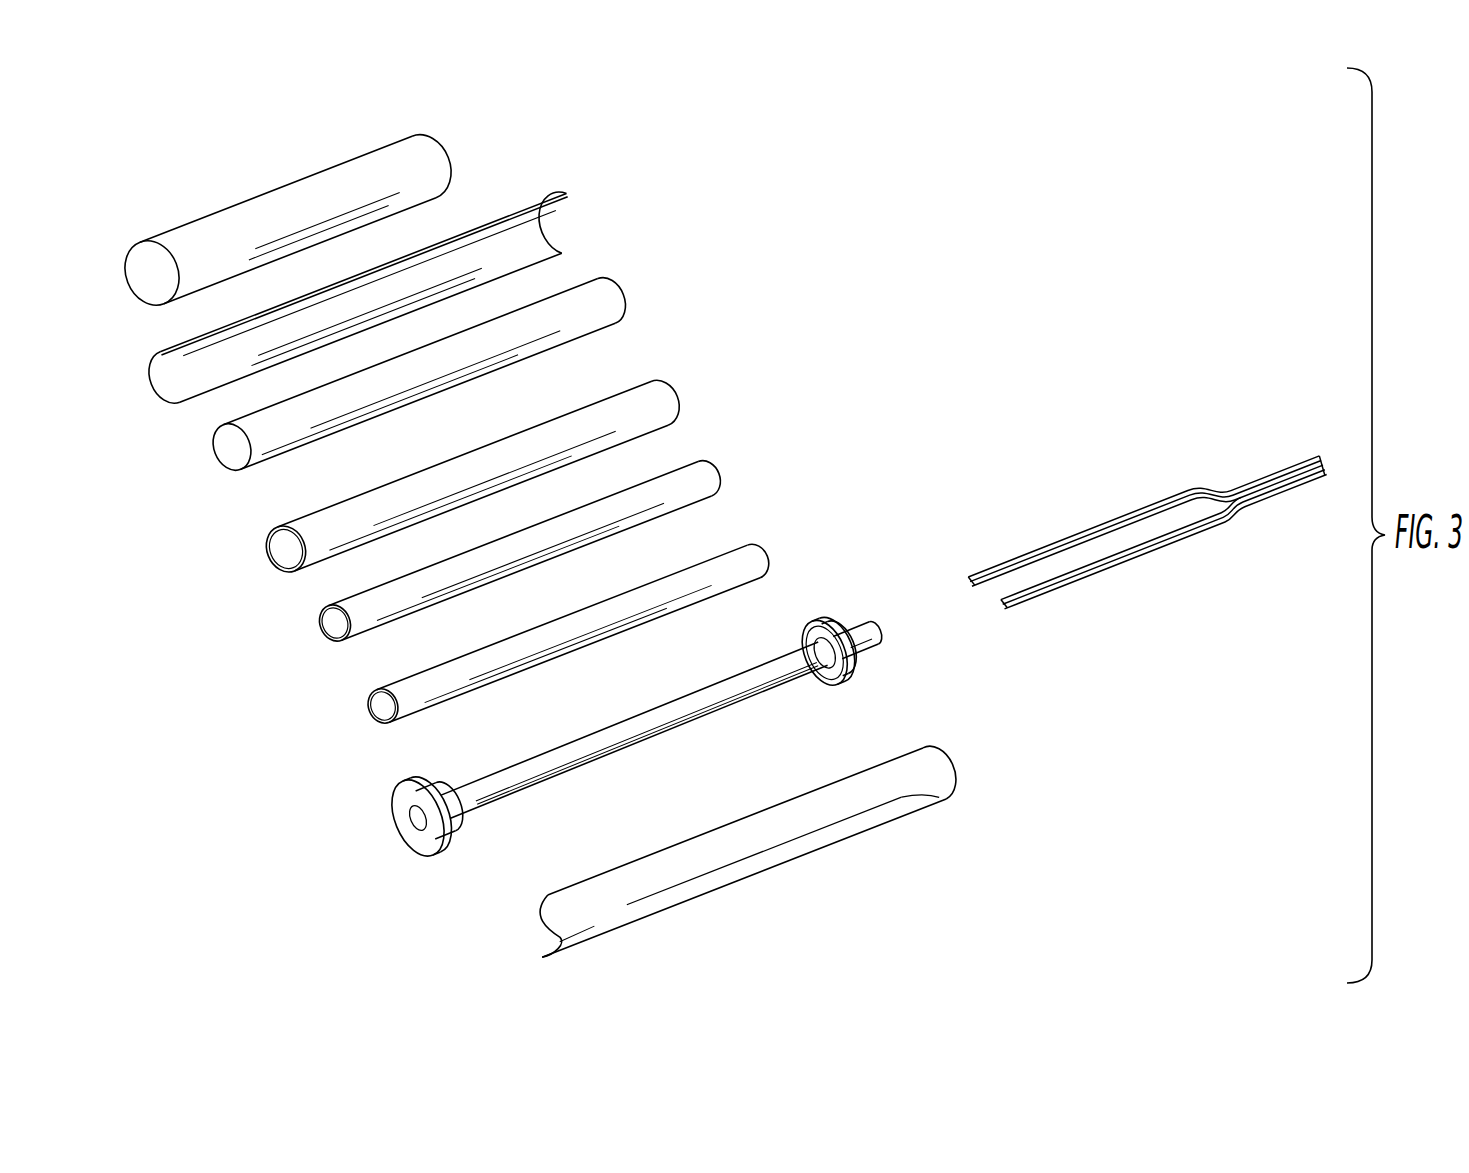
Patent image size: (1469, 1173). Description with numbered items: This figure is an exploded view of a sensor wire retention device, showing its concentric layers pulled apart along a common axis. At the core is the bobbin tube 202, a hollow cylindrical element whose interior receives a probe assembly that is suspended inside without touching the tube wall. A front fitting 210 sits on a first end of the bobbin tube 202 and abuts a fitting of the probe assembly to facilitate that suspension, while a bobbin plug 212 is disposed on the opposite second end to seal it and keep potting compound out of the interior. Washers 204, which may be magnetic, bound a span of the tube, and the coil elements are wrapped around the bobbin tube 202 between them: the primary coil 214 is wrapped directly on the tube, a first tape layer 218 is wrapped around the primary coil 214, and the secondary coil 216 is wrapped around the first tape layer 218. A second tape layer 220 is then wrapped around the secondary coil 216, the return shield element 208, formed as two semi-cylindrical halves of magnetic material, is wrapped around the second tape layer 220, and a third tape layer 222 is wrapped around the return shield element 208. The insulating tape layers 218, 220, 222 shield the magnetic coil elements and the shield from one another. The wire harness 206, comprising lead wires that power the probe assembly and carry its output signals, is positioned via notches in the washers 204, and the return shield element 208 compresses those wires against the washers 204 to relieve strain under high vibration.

The bobbin tube 202 is at (538, 785).
The washers 204 is at (451, 769).
The wire harness 206 is at (1331, 439).
The return shield element 208 is at (153, 382).
The front fitting 210 is at (389, 807).
The bobbin plug 212 is at (882, 619).
The primary coil 214 is at (362, 706).
The secondary coil 216 is at (262, 555).
The first tape layer 218 is at (718, 466).
The second tape layer 220 is at (622, 286).
The third tape layer 222 is at (449, 156).